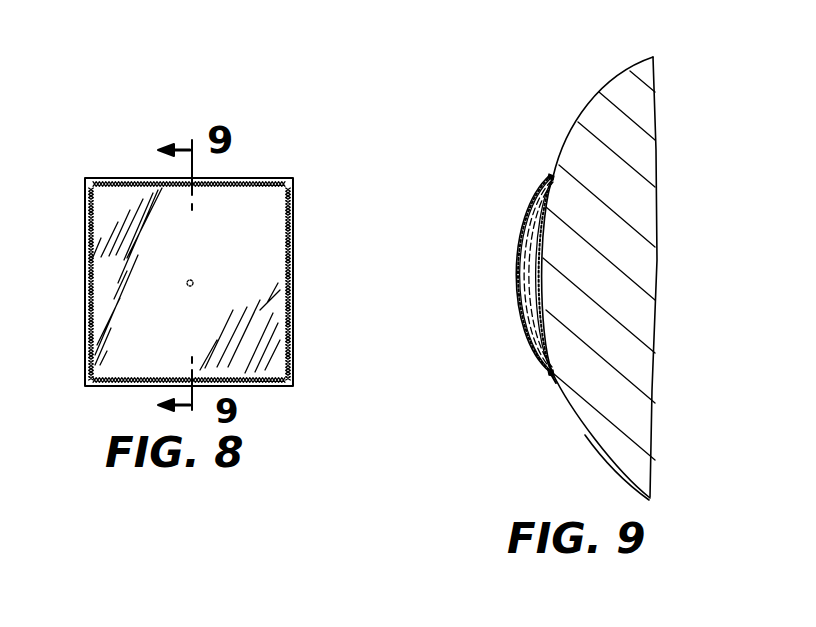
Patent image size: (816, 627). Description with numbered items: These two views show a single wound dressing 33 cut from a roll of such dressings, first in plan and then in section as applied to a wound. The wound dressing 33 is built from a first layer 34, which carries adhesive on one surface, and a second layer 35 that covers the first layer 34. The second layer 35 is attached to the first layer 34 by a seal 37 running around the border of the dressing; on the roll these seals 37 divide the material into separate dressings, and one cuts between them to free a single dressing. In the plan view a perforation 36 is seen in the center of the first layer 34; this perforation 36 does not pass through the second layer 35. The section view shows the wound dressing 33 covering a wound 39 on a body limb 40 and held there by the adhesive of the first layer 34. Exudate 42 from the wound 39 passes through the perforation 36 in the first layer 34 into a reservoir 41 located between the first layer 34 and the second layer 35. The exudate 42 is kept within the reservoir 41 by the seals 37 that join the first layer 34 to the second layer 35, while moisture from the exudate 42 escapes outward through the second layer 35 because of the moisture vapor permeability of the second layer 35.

In FIG. 8, the wound dressing 33 is at (280, 178).
In FIG. 9, the wound dressing 33 is at (505, 287).
In FIG. 9, the first layer 34 is at (553, 384).
In FIG. 8, the second layer 35 is at (273, 250).
In FIG. 9, the second layer 35 is at (528, 352).
In FIG. 8, the perforation 36 is at (187, 277).
In FIG. 9, the perforation 36 is at (540, 278).
In FIG. 8, the seal 37 is at (88, 205).
In FIG. 9, the seal 37 is at (551, 176).
In FIG. 9, the wound 39 is at (550, 262).
In FIG. 9, the body limb 40 is at (605, 88).
In FIG. 9, the reservoir 41 is at (523, 222).
In FIG. 9, the exudate 42 is at (532, 250).